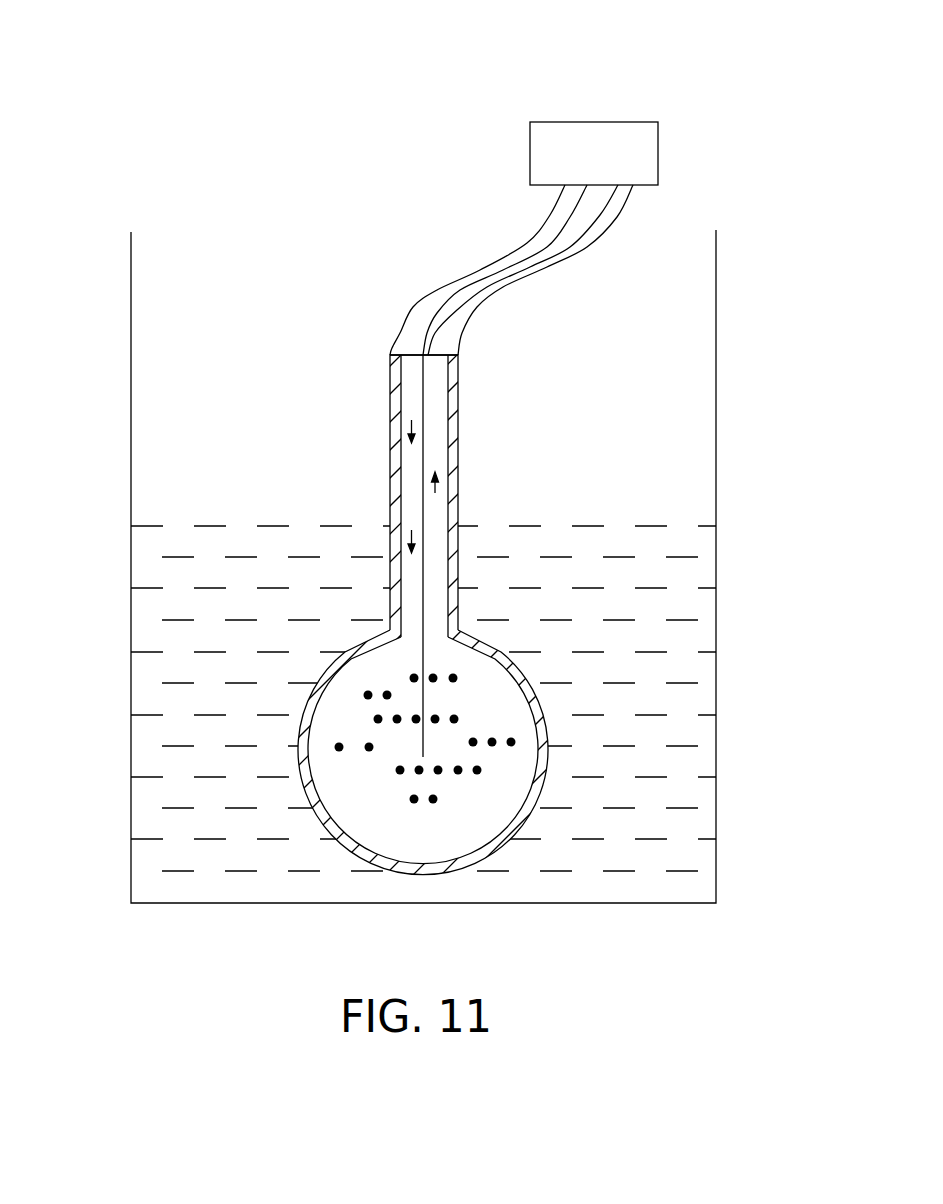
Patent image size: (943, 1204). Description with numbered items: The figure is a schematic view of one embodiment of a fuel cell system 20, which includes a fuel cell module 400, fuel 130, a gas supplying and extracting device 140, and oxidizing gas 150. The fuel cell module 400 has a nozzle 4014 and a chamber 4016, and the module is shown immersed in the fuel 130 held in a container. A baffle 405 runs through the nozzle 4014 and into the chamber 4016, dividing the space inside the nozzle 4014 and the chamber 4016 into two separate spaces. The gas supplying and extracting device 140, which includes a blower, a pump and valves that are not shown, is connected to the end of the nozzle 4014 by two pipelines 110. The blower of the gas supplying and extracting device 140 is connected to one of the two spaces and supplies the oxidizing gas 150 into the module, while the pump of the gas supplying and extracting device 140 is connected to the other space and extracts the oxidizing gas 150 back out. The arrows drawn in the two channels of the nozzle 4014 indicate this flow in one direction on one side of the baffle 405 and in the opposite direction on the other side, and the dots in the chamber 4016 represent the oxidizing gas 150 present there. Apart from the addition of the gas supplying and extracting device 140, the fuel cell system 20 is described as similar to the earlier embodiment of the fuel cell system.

The fuel cell system 20 is at (385, 58).
The gas supplying and extracting device 140 is at (660, 152).
The pipelines 110 is at (567, 218).
The fuel cell module 400 is at (398, 408).
The nozzle 4014 is at (453, 428).
The fuel 130 is at (650, 716).
The chamber 4016 is at (360, 782).
The baffle 405 is at (423, 738).
The oxidizing gas 150 is at (368, 693).